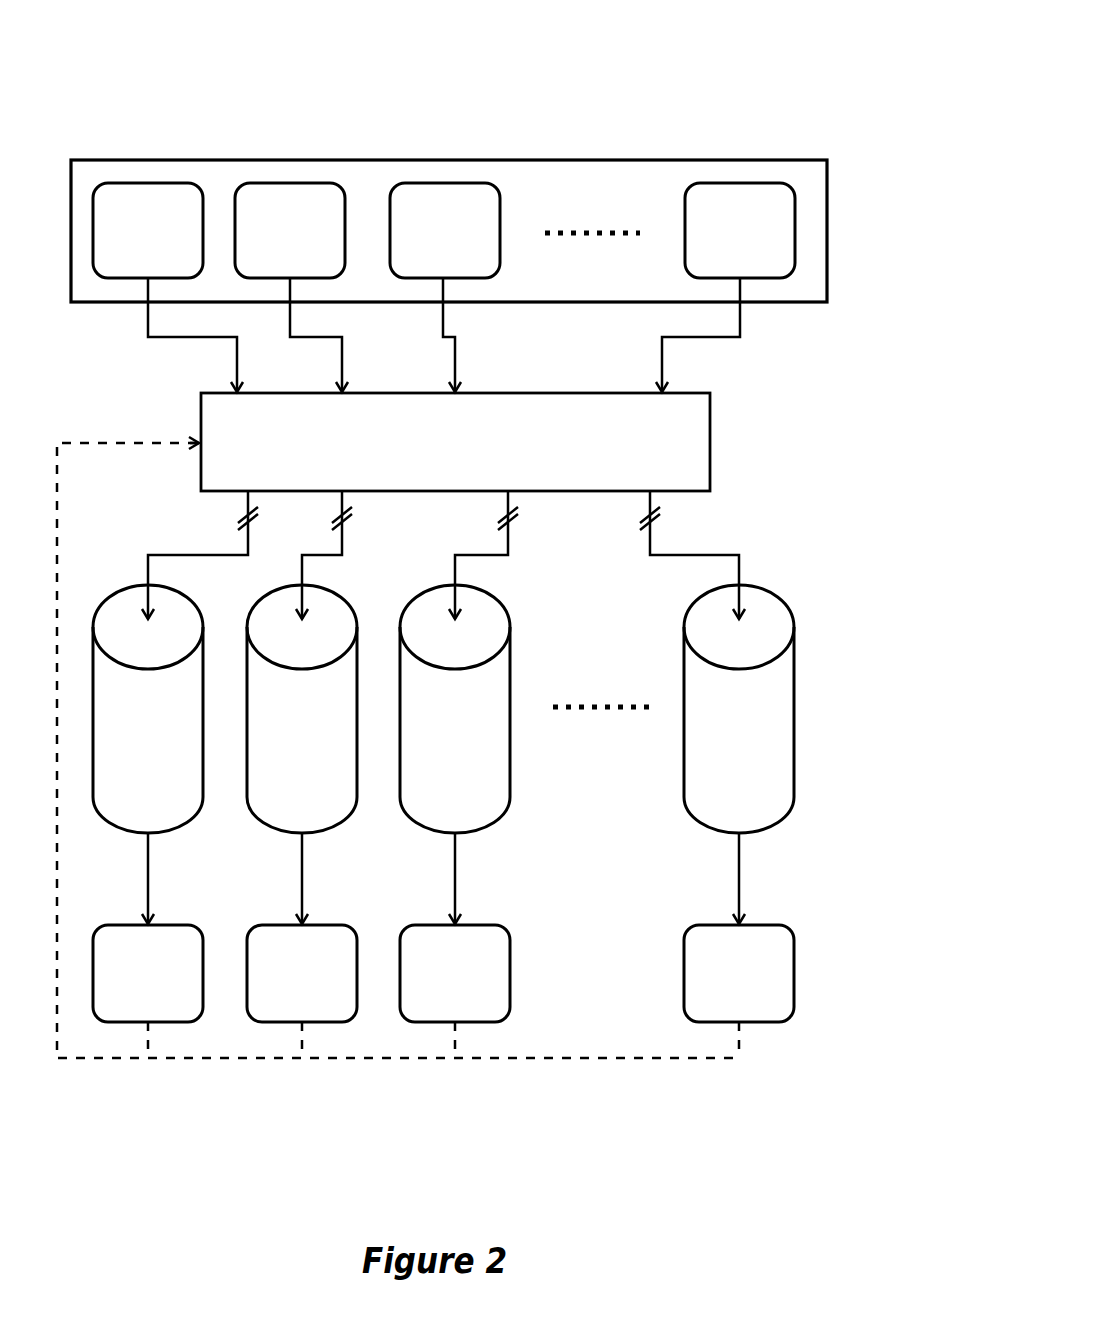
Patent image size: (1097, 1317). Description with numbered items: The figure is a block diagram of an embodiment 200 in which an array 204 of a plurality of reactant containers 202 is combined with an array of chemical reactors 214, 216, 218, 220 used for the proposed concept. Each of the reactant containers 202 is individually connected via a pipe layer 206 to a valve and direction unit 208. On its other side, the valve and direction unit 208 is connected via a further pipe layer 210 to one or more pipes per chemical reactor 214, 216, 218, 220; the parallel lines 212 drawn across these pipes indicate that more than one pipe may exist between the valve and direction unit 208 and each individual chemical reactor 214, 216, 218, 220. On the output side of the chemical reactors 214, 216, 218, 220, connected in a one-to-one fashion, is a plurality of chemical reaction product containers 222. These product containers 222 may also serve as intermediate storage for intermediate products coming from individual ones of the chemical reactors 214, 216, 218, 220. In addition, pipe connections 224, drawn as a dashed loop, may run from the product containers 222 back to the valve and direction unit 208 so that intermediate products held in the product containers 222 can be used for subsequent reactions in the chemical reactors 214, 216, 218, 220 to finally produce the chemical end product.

The embodiment 200 is at (718, 88).
The reactant containers 202 is at (175, 250).
The array 204 is at (613, 205).
The pipe layer 206 is at (742, 365).
The valve and direction unit 208 is at (482, 461).
The pipe layer 210 is at (737, 528).
The parallel lines 212 is at (230, 523).
The chemical reactor 214 is at (175, 751).
The chemical reactor 216 is at (329, 751).
The chemical reactor 218 is at (482, 751).
The chemical reactor 220 is at (766, 751).
The chemical reaction product containers 222 is at (175, 984).
The pipe connections 224 is at (265, 1070).